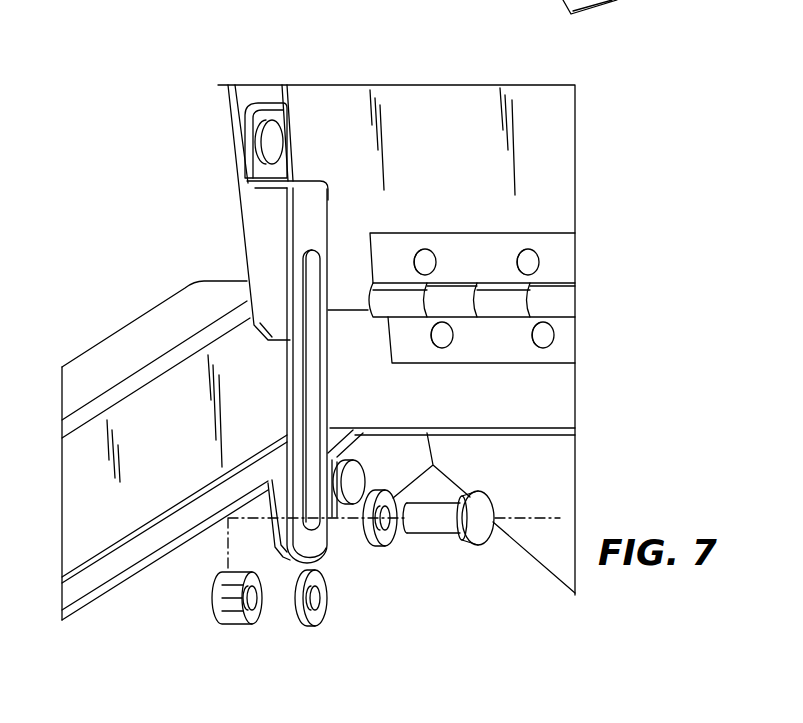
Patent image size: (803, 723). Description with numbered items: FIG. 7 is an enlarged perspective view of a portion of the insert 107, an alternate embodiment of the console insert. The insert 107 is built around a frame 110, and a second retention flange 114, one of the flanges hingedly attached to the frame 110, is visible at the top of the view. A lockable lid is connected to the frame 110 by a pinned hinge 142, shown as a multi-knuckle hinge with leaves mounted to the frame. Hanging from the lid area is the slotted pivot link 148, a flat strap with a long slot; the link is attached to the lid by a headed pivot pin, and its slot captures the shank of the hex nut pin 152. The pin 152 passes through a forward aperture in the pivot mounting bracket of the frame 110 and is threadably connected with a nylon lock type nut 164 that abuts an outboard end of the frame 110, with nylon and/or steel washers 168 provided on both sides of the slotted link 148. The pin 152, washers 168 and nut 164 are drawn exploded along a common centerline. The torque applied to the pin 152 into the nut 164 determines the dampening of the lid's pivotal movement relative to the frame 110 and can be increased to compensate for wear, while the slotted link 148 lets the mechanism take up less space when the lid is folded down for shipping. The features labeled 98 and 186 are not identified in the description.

The insert 107 is at (303, 40).
The second retention flange 114 is at (622, 8).
The mounting aperture 186 is at (273, 135).
The slotted pivot link 148 is at (330, 205).
The slotted bracket 98 is at (287, 376).
The pinned hinge 142 is at (465, 242).
The frame 110 is at (166, 400).
The hex nut pin 152 is at (440, 535).
The washers 168 is at (380, 546).
The nut 164 is at (214, 614).